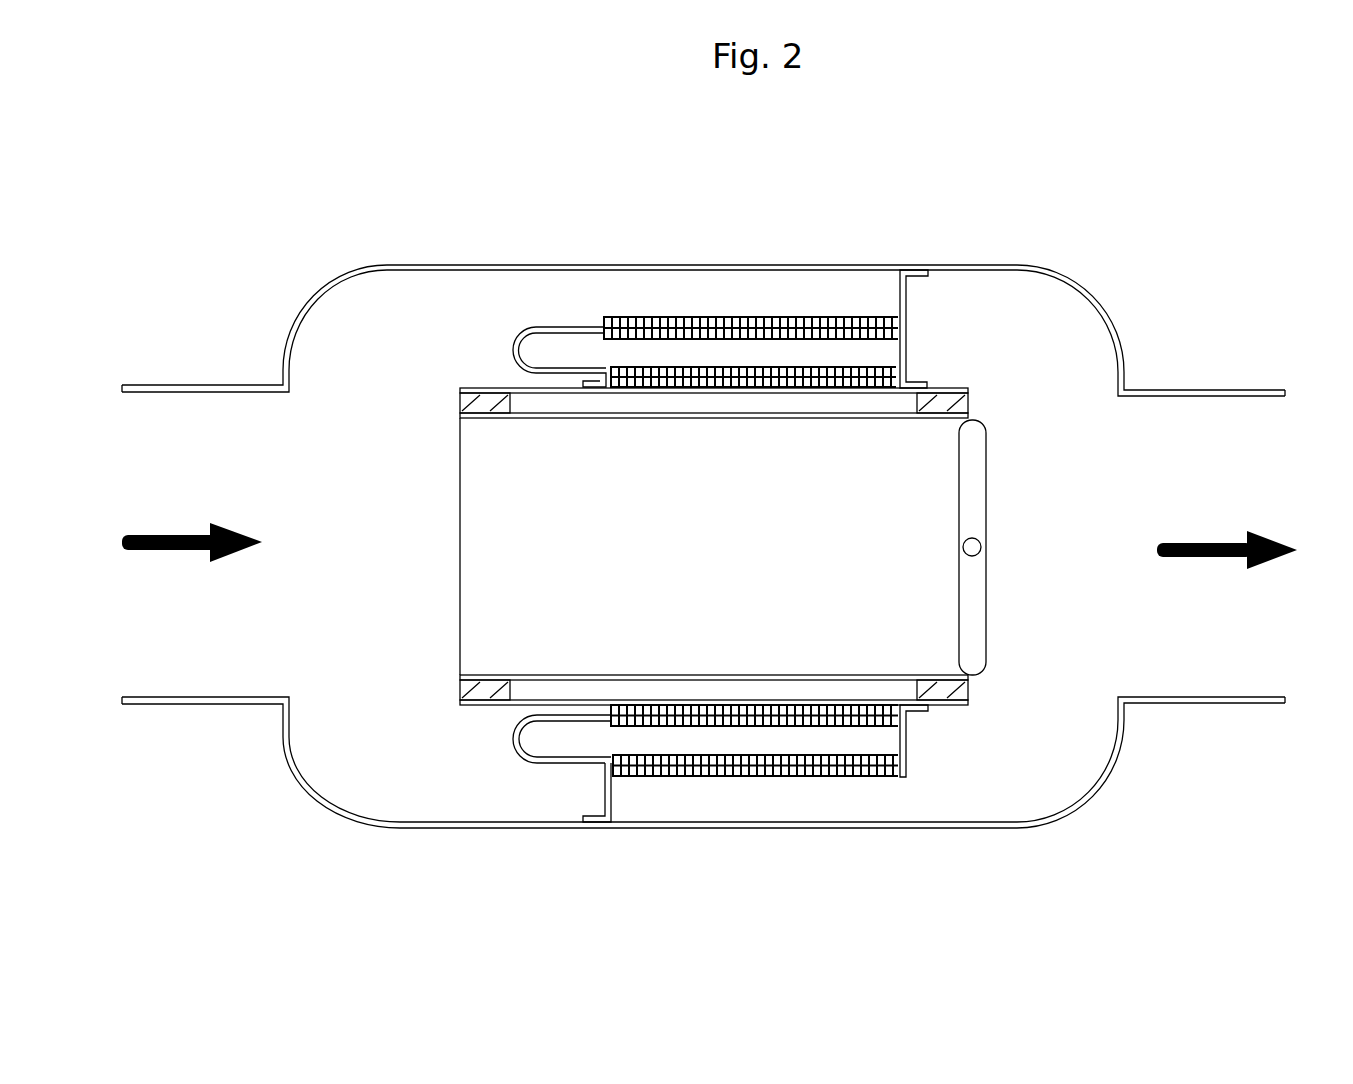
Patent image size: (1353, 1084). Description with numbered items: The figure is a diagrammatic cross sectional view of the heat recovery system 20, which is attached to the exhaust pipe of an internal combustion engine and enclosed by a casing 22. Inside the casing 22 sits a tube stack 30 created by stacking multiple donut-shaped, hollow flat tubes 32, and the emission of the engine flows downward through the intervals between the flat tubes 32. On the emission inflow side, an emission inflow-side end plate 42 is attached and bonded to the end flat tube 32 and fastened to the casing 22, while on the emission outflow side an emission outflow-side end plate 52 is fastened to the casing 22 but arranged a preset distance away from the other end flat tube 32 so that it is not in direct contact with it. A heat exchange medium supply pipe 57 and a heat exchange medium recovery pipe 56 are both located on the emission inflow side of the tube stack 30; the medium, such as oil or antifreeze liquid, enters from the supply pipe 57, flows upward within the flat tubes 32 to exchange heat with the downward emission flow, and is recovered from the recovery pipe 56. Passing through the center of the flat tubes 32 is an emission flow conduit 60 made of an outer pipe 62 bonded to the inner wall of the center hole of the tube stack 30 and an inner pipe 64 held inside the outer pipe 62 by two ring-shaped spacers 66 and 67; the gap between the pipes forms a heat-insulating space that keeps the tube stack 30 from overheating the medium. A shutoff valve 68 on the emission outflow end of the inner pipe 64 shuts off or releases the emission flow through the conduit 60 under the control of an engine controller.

The heat recovery system 20 is at (1058, 226).
The casing 22 is at (418, 265).
The tube stack 30 is at (890, 210).
The flat tube 32 is at (720, 316).
The emission inflow-side end plate 42 is at (605, 790).
The emission outflow-side end plate 52 is at (906, 300).
The heat exchange medium recovery pipe 56 is at (535, 327).
The heat exchange medium supply pipe 57 is at (523, 762).
The emission flow conduit 60 is at (457, 370).
The outer pipe 62 is at (497, 387).
The inner pipe 64 is at (546, 418).
The ring-shaped spacer 66 is at (460, 402).
The ring-shaped spacer 67 is at (970, 403).
The shutoff valve 68 is at (986, 490).